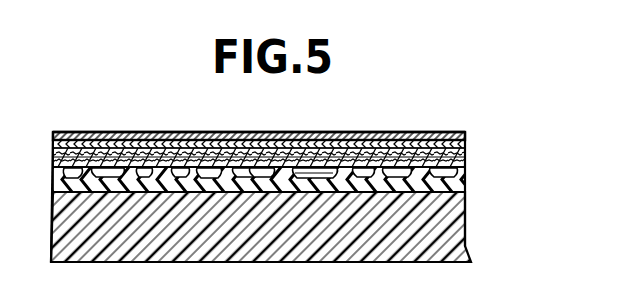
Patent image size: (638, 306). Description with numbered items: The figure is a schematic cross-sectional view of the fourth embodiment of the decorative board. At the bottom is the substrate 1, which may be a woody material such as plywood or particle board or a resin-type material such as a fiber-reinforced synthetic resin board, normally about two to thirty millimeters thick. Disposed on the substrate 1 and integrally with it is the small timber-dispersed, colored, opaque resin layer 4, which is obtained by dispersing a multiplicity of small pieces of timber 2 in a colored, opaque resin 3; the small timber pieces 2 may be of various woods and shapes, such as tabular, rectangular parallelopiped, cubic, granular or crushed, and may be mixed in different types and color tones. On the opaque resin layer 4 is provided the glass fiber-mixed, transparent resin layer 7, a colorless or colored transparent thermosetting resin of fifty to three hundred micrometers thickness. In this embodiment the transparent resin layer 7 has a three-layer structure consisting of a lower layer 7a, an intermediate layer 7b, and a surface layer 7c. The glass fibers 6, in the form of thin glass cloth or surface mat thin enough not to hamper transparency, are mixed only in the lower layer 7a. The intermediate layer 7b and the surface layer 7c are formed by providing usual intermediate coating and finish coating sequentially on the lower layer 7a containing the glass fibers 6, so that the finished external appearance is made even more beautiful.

The substrate 1 is at (452, 235).
The small pieces of timber 2 is at (176, 172).
The colored, opaque resin 3 is at (124, 170).
The small timber-dispersed, colored, opaque resin layer 4 is at (453, 185).
The glass fibers 6 is at (291, 167).
The glass fiber-mixed, transparent resin layer 7 is at (314, 129).
The lower layer 7a is at (465, 157).
The intermediate layer 7b is at (465, 148).
The surface layer 7c is at (295, 114).